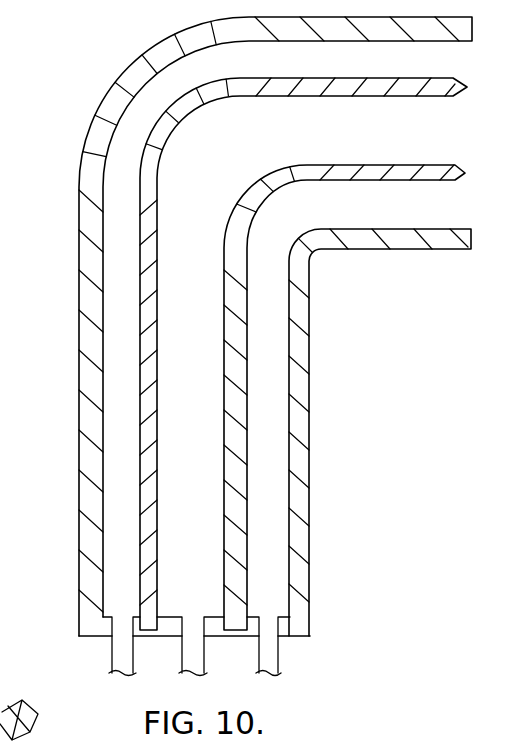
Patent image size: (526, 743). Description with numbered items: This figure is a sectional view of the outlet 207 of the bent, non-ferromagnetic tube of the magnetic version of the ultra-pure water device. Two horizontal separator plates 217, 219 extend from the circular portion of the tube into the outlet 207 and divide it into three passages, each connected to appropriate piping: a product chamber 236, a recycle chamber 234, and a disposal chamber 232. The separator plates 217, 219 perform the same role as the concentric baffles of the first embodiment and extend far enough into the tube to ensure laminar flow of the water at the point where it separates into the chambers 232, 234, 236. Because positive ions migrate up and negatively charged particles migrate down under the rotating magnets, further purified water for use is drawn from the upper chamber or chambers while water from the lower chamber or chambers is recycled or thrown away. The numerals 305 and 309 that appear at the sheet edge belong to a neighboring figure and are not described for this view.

The separator plate 217 is at (147, 273).
The separator plate 219 is at (241, 314).
The outlet 207 is at (307, 350).
The recycle chamber 234 is at (212, 578).
The product chamber 236 is at (120, 565).
The disposal chamber 232 is at (259, 559).
The fragment of adjacent figure 305 is at (22, 712).
The fragment of adjacent figure 309 is at (362, 742).